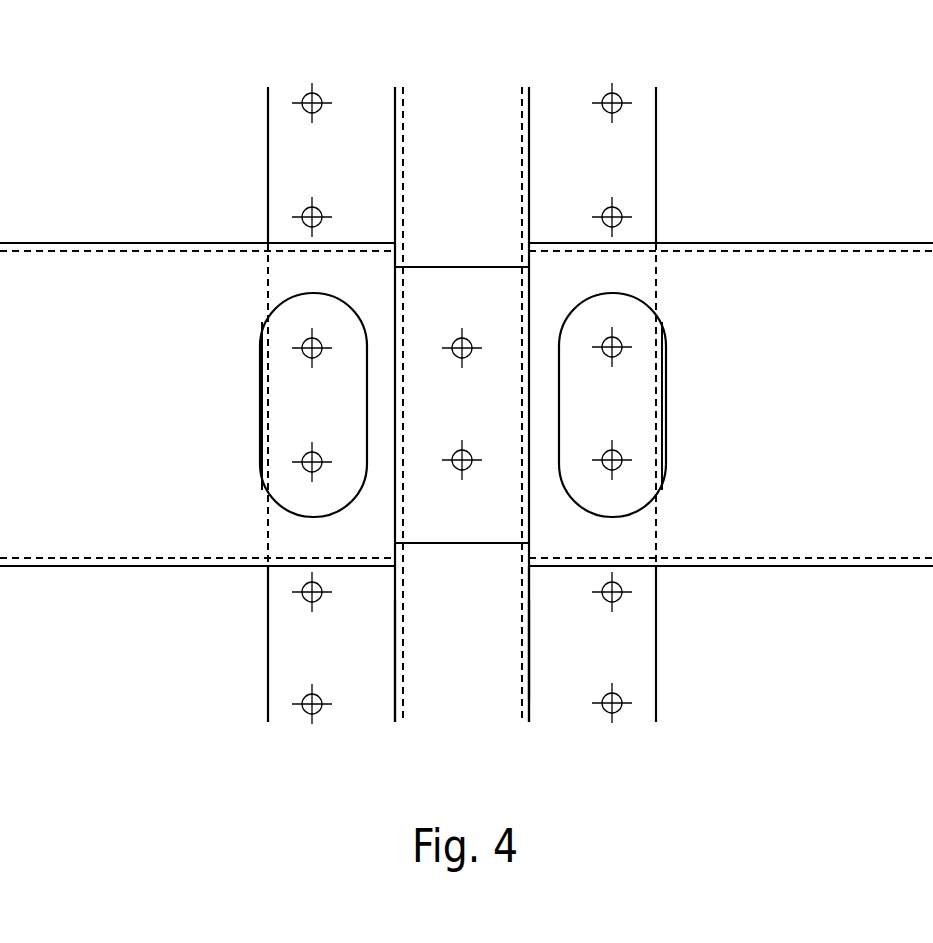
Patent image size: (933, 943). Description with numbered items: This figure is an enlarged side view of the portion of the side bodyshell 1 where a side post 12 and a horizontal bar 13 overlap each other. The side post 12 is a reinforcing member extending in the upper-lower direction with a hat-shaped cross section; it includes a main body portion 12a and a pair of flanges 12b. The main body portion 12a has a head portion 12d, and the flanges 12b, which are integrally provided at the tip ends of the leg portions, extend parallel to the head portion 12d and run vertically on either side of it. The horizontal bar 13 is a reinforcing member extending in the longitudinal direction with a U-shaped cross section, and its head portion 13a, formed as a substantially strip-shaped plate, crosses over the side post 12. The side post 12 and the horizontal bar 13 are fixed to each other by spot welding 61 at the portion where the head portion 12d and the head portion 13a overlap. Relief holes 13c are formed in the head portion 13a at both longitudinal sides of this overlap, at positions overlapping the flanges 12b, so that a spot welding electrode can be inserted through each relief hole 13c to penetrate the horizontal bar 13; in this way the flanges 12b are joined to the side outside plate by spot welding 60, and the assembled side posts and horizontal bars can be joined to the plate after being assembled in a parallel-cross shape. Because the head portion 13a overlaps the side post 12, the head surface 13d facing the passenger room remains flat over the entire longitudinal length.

The side bodyshell 1 is at (847, 113).
The side post 12 is at (473, 105).
The main body portion 12a is at (462, 697).
The flange 12b is at (328, 318).
The head portion 12d is at (500, 610).
The horizontal bar 13 is at (778, 262).
The head portion 13a is at (340, 549).
The relief hole 13c is at (278, 417).
The head surface 13d is at (443, 416).
The spot welding 60 is at (304, 214).
The spot welding 61 is at (475, 455).